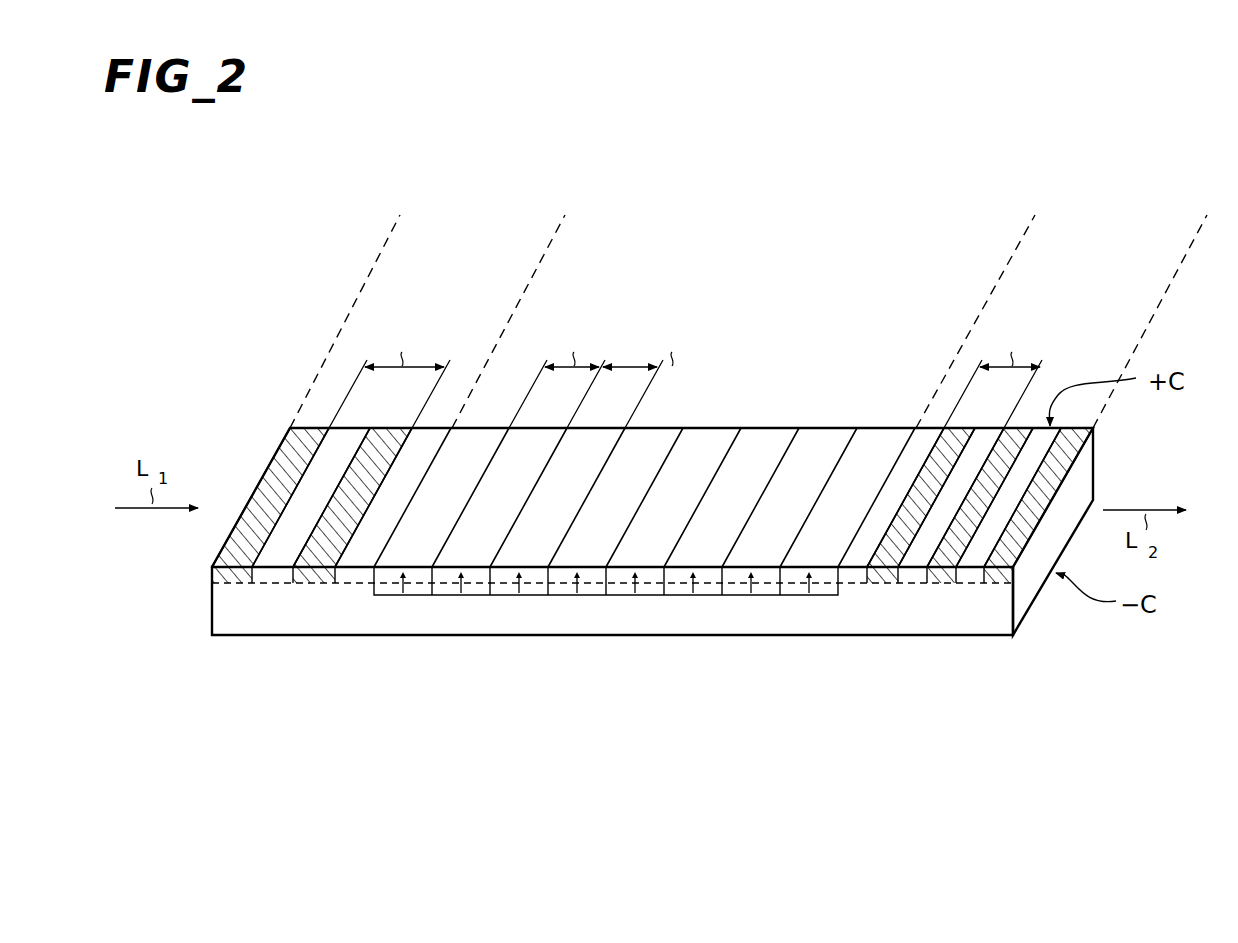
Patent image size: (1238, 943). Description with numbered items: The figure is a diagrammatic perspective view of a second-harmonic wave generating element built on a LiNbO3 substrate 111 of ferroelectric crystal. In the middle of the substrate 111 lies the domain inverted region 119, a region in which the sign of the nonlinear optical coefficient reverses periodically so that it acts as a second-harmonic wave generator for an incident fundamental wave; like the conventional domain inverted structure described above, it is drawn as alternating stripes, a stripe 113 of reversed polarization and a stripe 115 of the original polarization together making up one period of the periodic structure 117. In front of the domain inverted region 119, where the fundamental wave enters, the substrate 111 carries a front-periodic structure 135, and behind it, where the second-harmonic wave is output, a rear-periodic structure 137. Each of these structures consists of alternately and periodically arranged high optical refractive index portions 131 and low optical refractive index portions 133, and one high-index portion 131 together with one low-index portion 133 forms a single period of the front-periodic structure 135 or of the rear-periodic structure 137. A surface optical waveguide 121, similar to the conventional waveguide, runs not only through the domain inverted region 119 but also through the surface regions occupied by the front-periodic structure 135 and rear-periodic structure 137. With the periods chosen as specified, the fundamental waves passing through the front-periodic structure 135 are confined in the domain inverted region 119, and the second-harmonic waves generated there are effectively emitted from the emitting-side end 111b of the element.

The LiNbO3 substrate 111 is at (726, 622).
The end of the emitting side 111b is at (1084, 478).
The first domain 113 is at (483, 557).
The second domain 115 is at (537, 557).
The domain period 117 is at (685, 320).
The domain inverted region 119 is at (1033, 222).
The electrode layer 121 is at (204, 564).
The high optical refractive index portion 131 is at (322, 558).
The low optical refractive index portion 133 is at (277, 558).
The front-periodic structure 135 is at (563, 222).
The rear-periodic structure 137 is at (1205, 222).